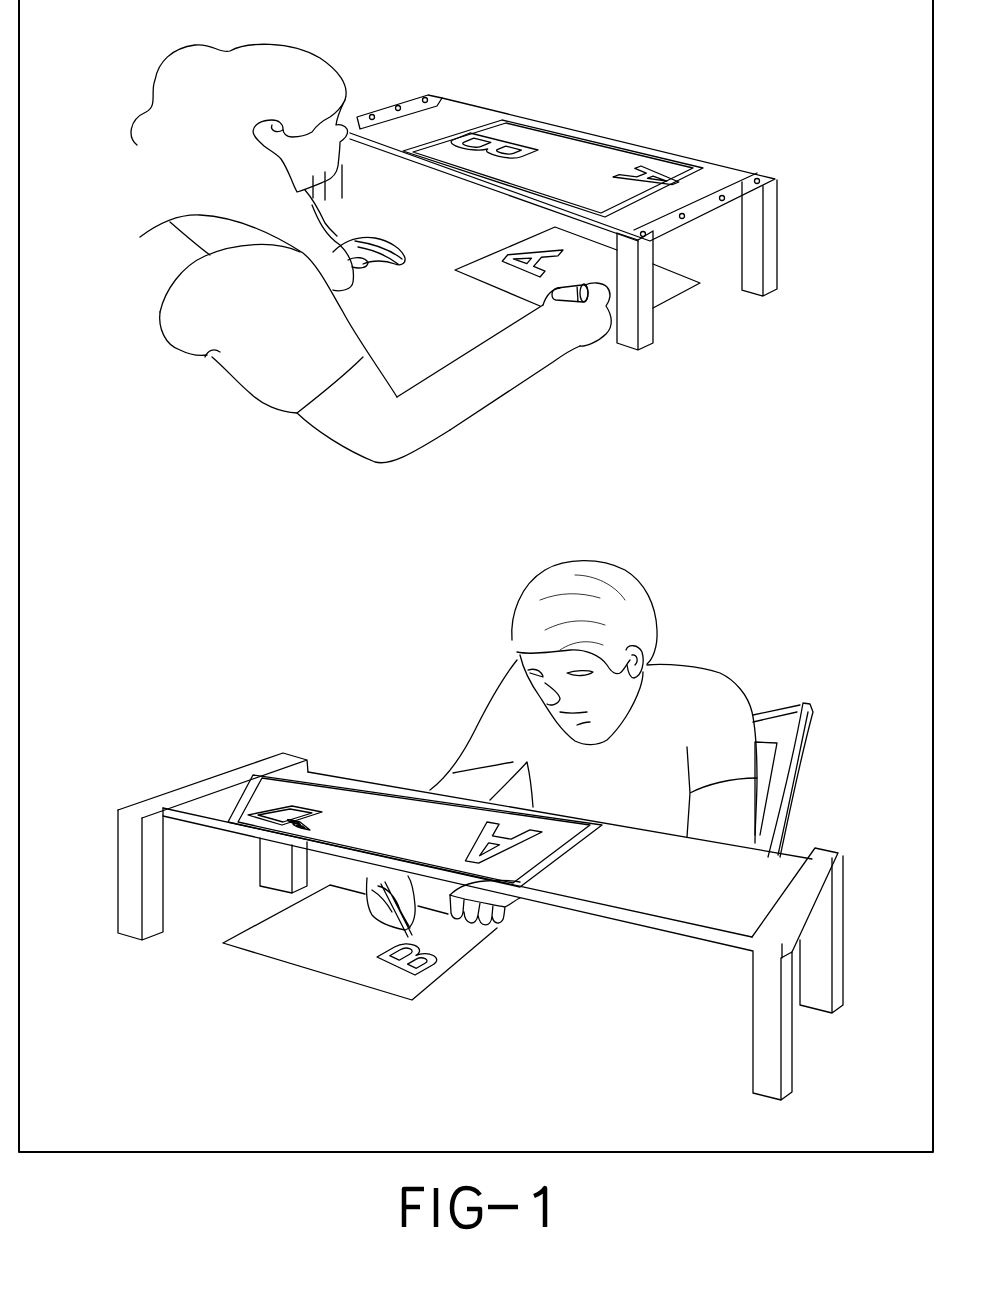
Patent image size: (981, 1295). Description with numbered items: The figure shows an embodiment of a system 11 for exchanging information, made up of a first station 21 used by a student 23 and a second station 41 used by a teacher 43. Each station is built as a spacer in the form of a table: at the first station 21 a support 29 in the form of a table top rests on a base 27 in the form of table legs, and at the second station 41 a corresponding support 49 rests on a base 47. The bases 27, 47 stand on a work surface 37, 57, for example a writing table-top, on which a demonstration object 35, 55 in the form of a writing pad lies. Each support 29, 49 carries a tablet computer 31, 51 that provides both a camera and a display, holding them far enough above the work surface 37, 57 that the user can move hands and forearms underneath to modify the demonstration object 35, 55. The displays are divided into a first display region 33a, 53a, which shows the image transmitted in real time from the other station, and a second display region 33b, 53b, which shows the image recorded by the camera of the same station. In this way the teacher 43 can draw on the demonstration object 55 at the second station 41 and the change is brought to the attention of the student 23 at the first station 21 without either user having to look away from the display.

The system 11 is at (822, 470).
The first station 21 is at (431, 738).
The student 23 is at (535, 613).
The base 27 is at (782, 1046).
The support 29 is at (750, 873).
The tablet computer 31 is at (360, 798).
The first display region 33a is at (523, 840).
The second display region 33b is at (284, 808).
The demonstration object 35 is at (398, 984).
The work surface 37 is at (521, 976).
The second station 41 is at (612, 108).
The teacher 43 is at (200, 78).
The base 47 is at (768, 222).
The support 49 is at (715, 178).
The tablet computer 51 is at (558, 157).
The first display region 53a is at (493, 142).
The second display region 53b is at (652, 176).
The demonstration object 55 is at (515, 287).
The work surface 57 is at (703, 283).